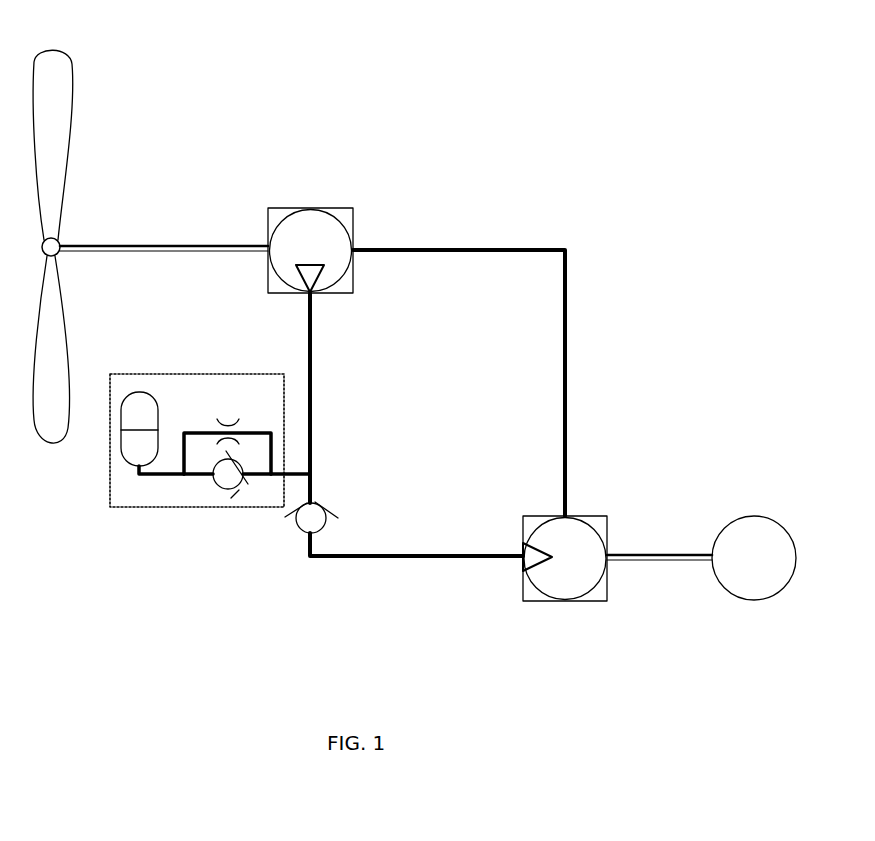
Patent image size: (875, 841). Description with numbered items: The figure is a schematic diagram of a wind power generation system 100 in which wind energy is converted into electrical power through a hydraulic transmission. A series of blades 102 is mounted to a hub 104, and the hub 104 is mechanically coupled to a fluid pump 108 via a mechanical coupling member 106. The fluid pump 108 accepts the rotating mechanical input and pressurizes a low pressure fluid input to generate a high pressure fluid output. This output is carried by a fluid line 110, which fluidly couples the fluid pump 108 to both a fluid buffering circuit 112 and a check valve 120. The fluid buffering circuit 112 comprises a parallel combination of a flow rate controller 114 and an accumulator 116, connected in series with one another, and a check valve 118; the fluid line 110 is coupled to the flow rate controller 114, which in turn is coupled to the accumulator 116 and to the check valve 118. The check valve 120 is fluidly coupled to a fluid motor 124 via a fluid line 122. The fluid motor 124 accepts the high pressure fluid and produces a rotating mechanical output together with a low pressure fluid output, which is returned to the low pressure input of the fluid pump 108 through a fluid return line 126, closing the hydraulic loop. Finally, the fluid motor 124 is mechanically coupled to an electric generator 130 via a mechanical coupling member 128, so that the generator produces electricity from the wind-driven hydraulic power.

The wind power generation system 100 is at (676, 139).
The blades 102 is at (77, 100).
The hub 104 is at (58, 238).
The mechanical coupling member 106 is at (158, 240).
The fluid pump 108 is at (297, 205).
The fluid line 110 is at (315, 385).
The fluid buffering circuit 112 is at (114, 510).
The flow rate controller 114 is at (220, 410).
The accumulator 116 is at (132, 390).
The check valve 118 is at (229, 488).
The check valve 120 is at (303, 535).
The fluid line 122 is at (412, 563).
The fluid motor 124 is at (598, 512).
The fluid return line 126 is at (567, 375).
The mechanical coupling member 128 is at (635, 548).
The electric generator 130 is at (757, 515).